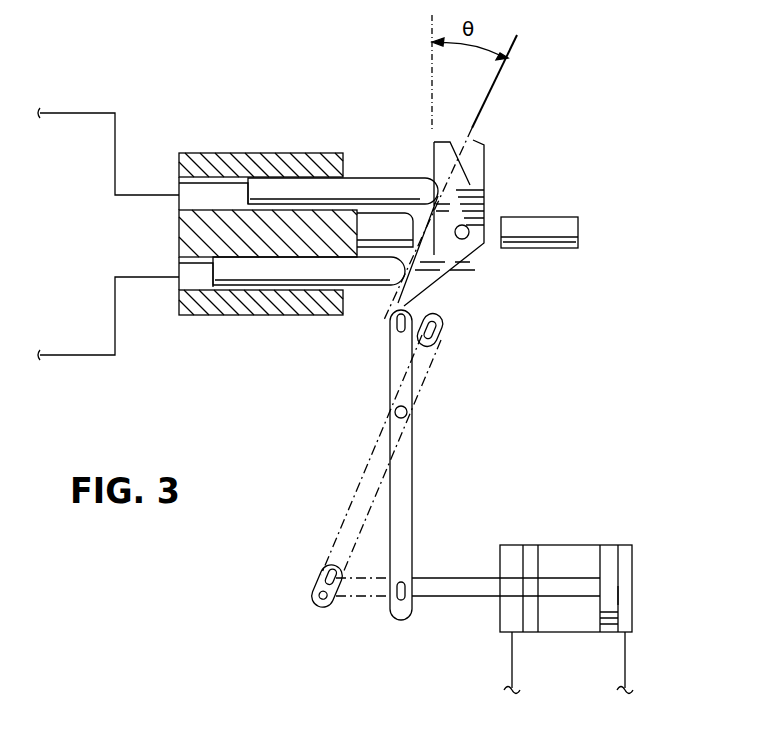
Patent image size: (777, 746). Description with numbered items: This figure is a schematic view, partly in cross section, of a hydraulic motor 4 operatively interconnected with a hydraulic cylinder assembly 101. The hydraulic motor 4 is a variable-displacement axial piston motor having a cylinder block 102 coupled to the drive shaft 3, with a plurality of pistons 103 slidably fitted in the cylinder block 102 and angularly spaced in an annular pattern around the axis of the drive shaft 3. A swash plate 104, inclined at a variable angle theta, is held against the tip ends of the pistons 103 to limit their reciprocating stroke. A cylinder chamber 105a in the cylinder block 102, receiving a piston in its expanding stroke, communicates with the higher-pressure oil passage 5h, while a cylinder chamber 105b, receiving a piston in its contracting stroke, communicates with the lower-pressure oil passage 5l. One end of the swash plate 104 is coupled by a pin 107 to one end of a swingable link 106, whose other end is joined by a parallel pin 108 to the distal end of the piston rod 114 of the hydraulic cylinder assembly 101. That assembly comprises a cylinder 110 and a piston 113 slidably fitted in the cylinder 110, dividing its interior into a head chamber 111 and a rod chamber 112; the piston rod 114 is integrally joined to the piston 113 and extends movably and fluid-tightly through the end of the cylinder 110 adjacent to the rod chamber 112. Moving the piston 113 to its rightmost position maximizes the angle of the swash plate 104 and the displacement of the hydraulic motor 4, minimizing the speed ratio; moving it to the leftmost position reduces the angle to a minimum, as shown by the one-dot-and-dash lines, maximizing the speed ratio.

The lower-pressure oil passage 5l is at (84, 108).
The higher-pressure oil passage 5h is at (84, 353).
The hydraulic motor 4 is at (280, 220).
The cylinder block 102 is at (256, 318).
The pistons 103 is at (370, 188).
The swash plate 104 is at (486, 198).
The cylinder chamber 105a is at (178, 282).
The cylinder chamber 105b is at (178, 184).
The drive shaft 3 is at (543, 235).
The swingable link 106 is at (407, 488).
The pin 107 is at (395, 320).
The pin 108 is at (405, 580).
The piston rod 114 is at (463, 597).
The hydraulic cylinder assembly 101 is at (592, 580).
The cylinder 110 is at (550, 545).
The head chamber 111 is at (633, 594).
The rod chamber 112 is at (553, 622).
The piston 113 is at (606, 552).